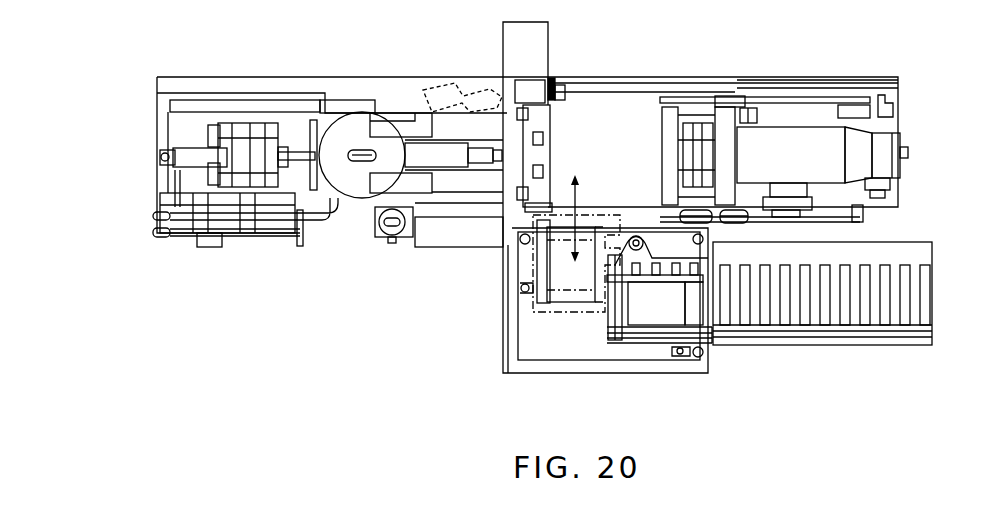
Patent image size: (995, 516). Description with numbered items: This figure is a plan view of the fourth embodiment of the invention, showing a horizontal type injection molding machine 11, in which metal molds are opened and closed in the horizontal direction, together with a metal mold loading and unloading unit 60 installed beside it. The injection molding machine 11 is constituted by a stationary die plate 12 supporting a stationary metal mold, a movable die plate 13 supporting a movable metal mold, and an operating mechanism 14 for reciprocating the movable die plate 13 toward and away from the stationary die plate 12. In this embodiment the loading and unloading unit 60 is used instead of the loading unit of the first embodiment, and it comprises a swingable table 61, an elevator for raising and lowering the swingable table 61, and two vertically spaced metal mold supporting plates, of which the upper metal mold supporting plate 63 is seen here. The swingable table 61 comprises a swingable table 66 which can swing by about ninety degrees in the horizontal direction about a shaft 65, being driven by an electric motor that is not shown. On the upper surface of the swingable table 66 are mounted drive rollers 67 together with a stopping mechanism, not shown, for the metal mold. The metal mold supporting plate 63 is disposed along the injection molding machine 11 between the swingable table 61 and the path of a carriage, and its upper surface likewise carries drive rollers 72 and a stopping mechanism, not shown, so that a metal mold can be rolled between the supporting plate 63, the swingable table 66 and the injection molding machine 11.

The horizontal type injection molding machine 11 is at (608, 70).
The stationary die plate 12 is at (548, 150).
The movable die plate 13 is at (668, 142).
The operating mechanism 14 is at (793, 130).
The metal mold loading and unloading unit 60 is at (485, 339).
The swingable table 61 is at (588, 353).
The metal mold supporting plate 63 is at (895, 249).
The shaft 65 is at (641, 251).
The swingable table 66 is at (590, 310).
The drive rollers 67 is at (708, 335).
The drive rollers 72 is at (920, 304).